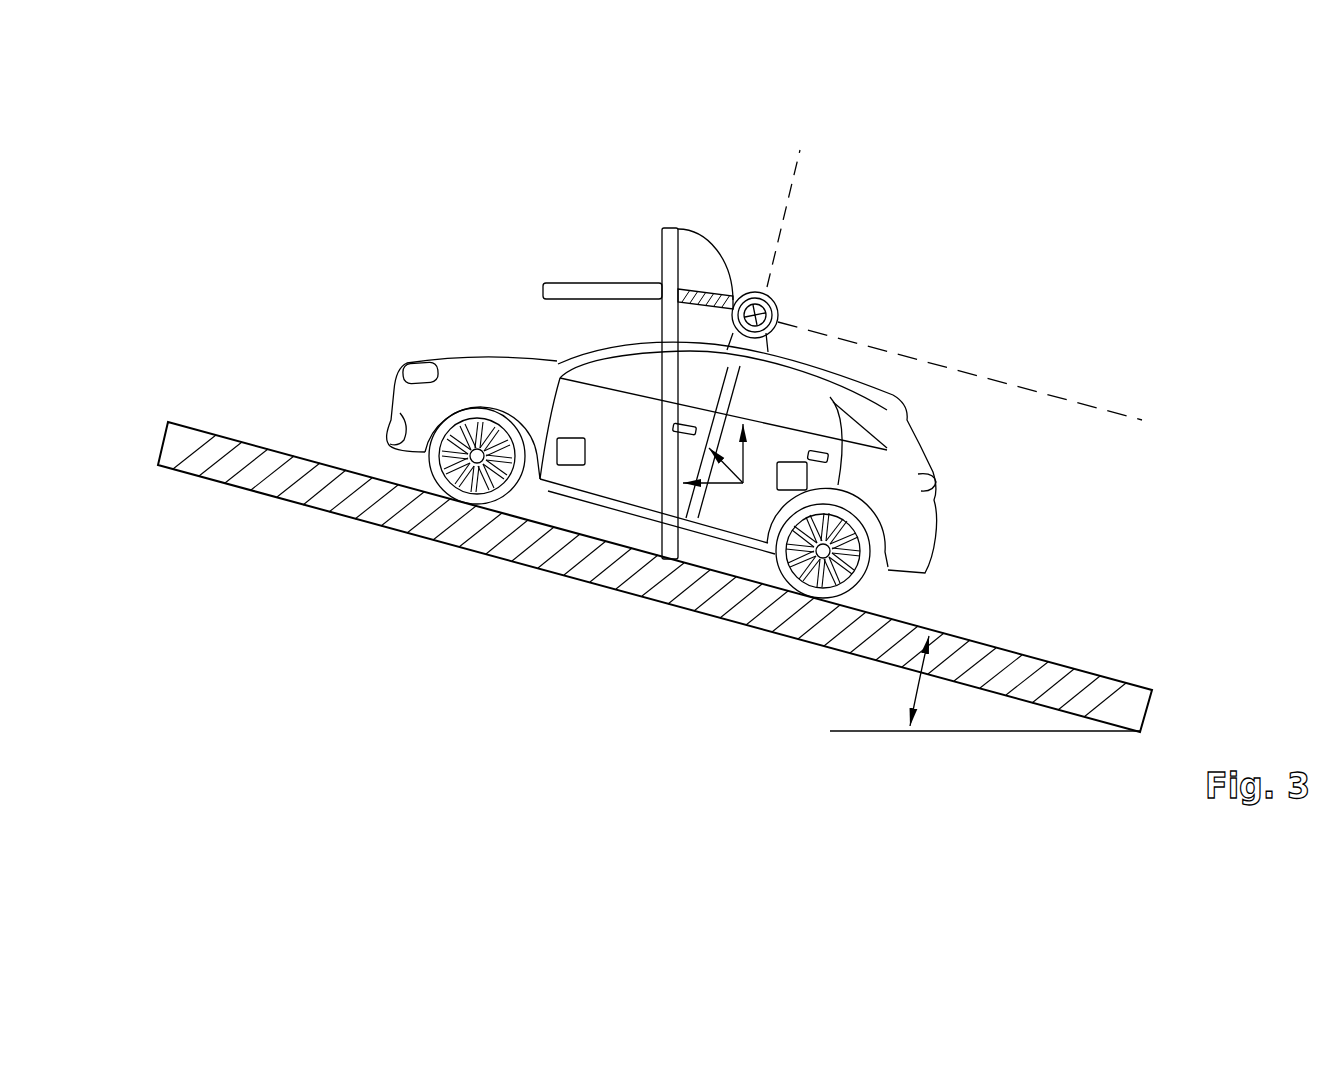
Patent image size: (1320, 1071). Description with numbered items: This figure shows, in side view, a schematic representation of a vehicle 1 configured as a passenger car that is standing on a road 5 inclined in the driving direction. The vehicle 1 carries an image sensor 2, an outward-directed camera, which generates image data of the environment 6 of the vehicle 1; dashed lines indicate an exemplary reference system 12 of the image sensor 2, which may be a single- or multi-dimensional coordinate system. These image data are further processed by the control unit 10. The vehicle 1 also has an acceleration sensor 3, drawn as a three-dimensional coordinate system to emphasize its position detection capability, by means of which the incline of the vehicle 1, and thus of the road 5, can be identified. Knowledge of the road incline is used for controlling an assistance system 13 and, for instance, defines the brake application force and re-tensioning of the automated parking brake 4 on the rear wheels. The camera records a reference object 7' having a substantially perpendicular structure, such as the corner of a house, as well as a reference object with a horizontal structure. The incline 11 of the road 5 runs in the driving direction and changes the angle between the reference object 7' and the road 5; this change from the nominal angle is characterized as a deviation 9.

The vehicle 1 is at (918, 502).
The image sensor 2 is at (775, 297).
The acceleration sensor 3 is at (717, 492).
The automated parking brake 4 is at (842, 560).
The road 5 is at (356, 497).
The environment 6 is at (849, 141).
The reference object 7' is at (643, 387).
The deviation 9 is at (714, 282).
The control unit 10 is at (800, 455).
The incline 11 is at (908, 680).
The reference system 12 is at (1062, 396).
The assistance system 13 is at (568, 470).